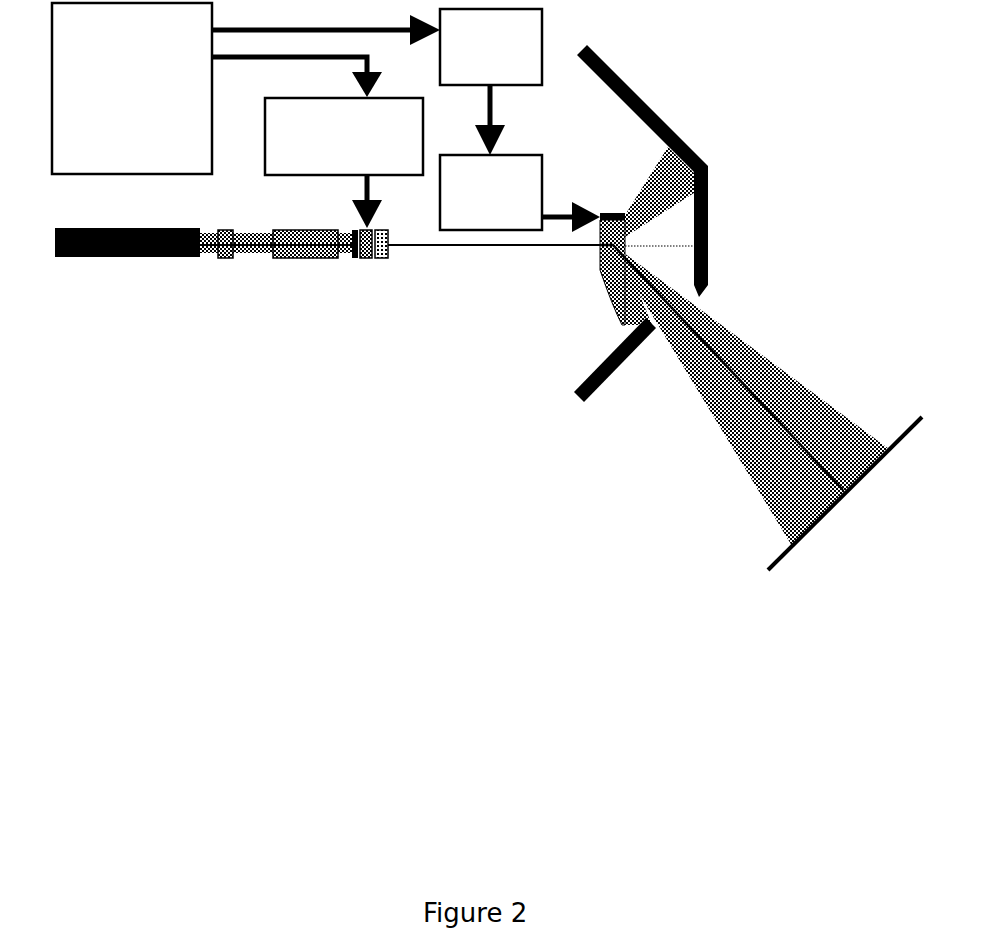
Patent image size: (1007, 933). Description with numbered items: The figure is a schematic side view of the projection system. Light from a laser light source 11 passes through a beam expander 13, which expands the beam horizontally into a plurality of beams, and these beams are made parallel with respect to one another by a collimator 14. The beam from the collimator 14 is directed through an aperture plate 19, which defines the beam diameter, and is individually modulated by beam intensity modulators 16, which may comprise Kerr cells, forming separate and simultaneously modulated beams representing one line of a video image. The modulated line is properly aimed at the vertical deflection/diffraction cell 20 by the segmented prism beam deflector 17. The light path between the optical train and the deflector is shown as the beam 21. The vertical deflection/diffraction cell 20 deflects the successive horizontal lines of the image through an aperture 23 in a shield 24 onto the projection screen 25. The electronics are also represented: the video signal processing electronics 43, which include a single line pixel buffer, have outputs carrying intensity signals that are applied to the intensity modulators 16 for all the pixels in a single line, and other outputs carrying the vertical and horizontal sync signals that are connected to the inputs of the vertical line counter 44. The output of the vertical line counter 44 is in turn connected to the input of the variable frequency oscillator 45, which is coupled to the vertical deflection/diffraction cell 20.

The laser light source 11 is at (127, 256).
The beam expander 13 is at (222, 272).
The collimator 14 is at (312, 272).
The beam intensity modulators 16 is at (330, 136).
The segmented prism 17 is at (384, 274).
The aperture plate 19 is at (352, 274).
The vertical deflection/diffraction cell 20 is at (633, 269).
The light beam 21 is at (494, 258).
The aperture 23 is at (712, 296).
The shield 24 is at (642, 218).
The projection screen 25 is at (845, 493).
The video signal processing electronics 43 is at (119, 88).
The vertical line counter 44 is at (491, 58).
The variable frequency oscillator 45 is at (491, 184).